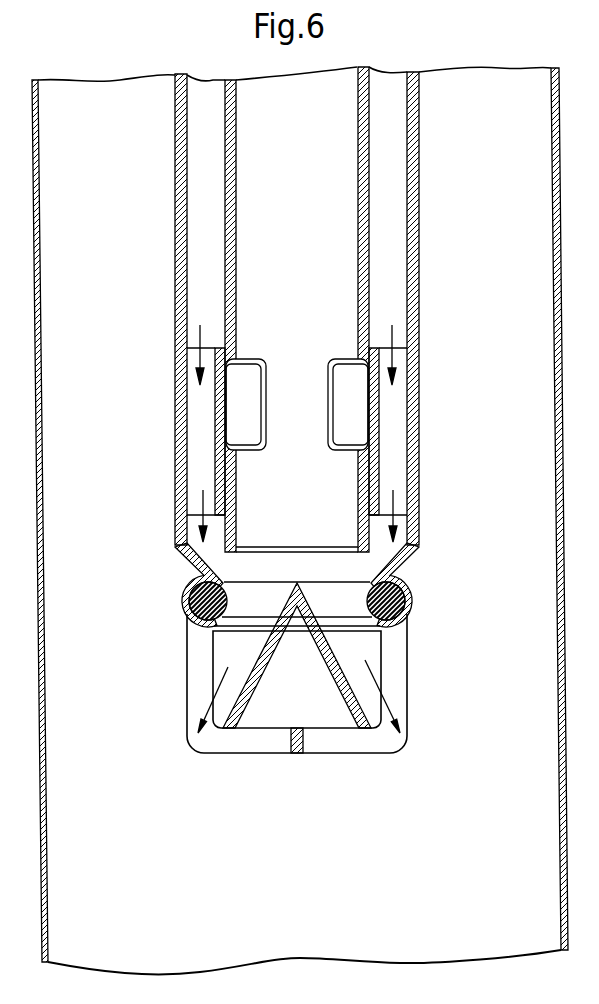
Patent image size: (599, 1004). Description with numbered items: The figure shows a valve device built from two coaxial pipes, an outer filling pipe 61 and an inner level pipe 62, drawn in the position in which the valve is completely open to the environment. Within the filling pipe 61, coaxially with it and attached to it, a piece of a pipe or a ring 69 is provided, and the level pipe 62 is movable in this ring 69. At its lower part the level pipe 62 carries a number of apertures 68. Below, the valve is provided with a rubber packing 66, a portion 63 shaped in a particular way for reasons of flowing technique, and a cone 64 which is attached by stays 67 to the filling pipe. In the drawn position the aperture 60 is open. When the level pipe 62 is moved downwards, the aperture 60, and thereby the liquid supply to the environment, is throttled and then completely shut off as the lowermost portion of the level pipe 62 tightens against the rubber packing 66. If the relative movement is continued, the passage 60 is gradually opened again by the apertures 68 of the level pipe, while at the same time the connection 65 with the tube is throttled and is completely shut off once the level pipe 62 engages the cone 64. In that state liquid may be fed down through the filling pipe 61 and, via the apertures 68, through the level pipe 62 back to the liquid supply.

The aperture 60 is at (232, 573).
The filling pipe 61 is at (178, 462).
The level pipe 62 is at (238, 488).
The portion 63 is at (188, 568).
The cone 64 is at (256, 677).
The connection 65 is at (223, 655).
The rubber packing 66 is at (190, 605).
The stays 67 is at (249, 746).
The apertures 68 is at (244, 385).
The ring 69 is at (222, 423).